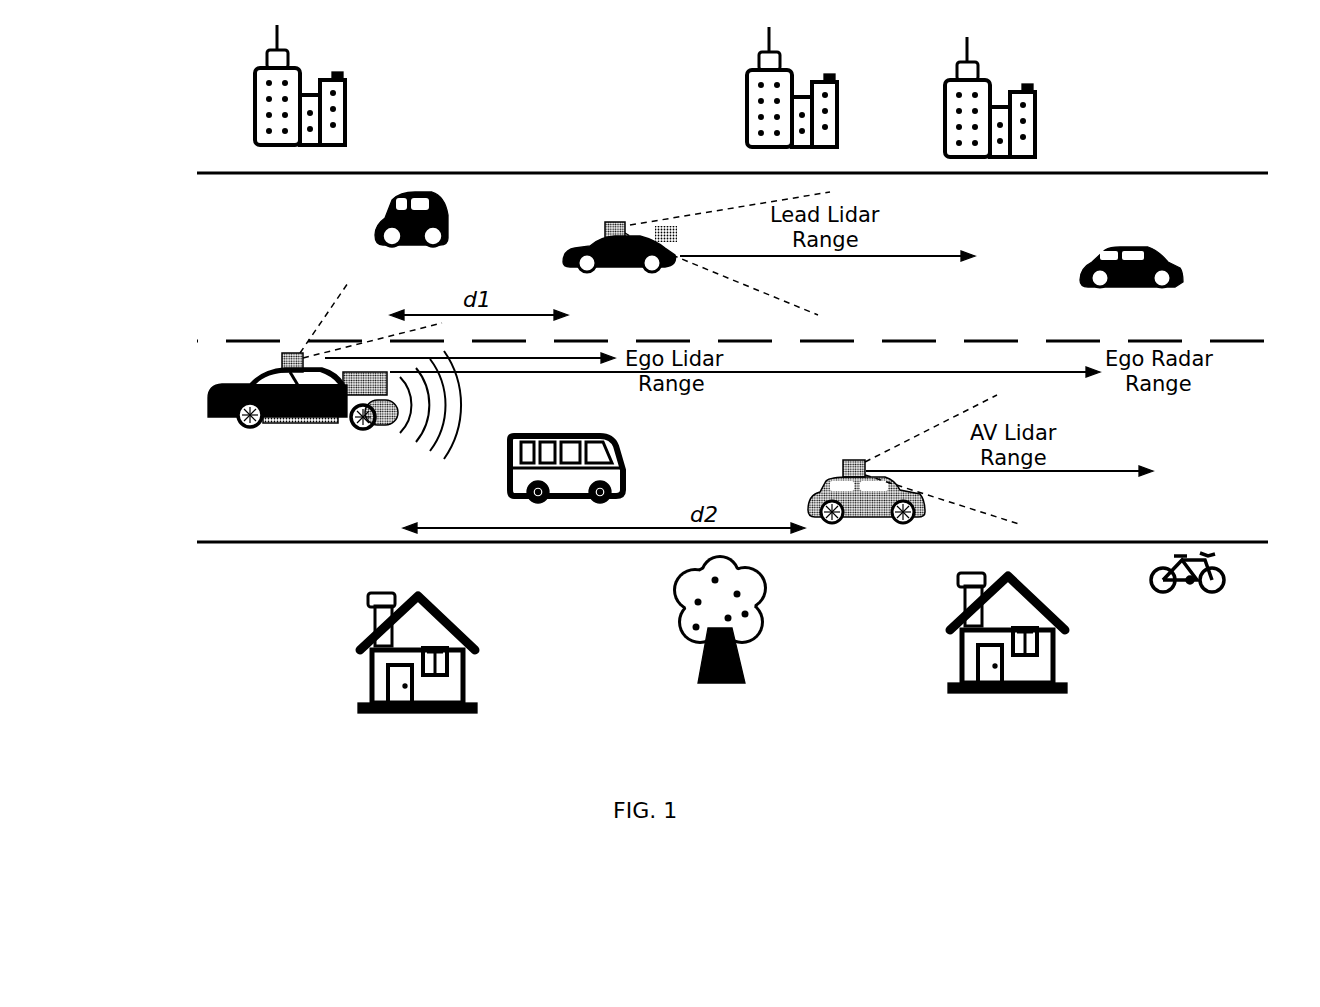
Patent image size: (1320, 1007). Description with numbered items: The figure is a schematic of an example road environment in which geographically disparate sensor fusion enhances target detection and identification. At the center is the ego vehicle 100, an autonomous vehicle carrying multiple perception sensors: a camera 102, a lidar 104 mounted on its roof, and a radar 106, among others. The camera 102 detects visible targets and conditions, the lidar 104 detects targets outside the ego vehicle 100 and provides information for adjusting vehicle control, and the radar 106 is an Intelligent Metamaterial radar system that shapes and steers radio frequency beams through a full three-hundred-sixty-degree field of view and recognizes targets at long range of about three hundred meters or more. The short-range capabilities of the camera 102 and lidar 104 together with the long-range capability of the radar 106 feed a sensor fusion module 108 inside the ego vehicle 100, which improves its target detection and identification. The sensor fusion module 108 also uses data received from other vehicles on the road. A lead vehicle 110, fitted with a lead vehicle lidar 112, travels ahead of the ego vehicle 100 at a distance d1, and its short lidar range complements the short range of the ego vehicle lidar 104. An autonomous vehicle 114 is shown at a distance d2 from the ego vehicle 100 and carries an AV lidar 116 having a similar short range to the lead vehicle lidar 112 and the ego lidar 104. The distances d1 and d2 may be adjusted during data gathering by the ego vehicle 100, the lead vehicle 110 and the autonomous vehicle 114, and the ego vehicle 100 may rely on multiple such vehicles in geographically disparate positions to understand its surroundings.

The ego vehicle 100 is at (215, 390).
The camera 102 is at (388, 424).
The lidar 104 is at (284, 354).
The radar 106 is at (362, 382).
The sensor fusion module 108 is at (277, 412).
The lead vehicle 110 is at (575, 247).
The lead vehicle lidar 112 is at (633, 262).
The autonomous vehicle (AV) 114 is at (812, 497).
The AV lidar 116 is at (843, 467).